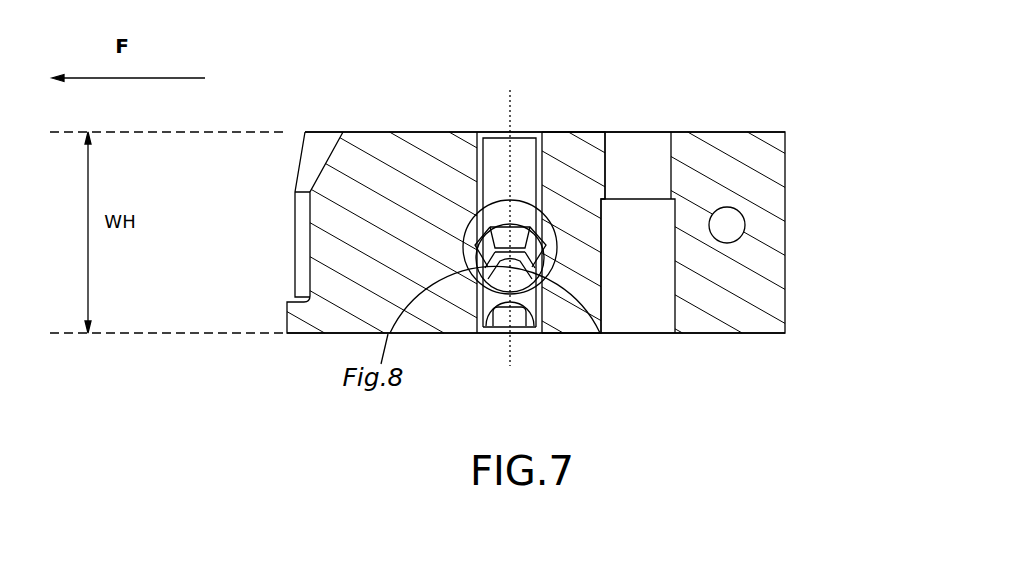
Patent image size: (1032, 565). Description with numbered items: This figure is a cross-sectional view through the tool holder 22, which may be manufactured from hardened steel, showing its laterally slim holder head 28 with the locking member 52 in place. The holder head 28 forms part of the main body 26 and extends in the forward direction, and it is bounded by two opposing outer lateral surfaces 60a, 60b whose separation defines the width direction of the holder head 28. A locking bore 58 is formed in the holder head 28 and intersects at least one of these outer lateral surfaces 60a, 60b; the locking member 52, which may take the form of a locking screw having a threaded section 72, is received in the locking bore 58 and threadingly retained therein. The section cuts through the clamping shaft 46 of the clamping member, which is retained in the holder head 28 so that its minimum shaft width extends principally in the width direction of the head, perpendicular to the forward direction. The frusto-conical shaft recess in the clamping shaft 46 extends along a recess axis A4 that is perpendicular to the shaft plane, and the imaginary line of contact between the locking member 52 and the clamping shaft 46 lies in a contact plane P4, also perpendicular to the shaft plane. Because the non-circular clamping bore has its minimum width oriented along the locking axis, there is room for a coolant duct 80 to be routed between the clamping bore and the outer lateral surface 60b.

The tool holder 22 is at (388, 113).
The main body 26 is at (577, 155).
The holder head 28 is at (379, 282).
The clamping shaft 46 is at (536, 247).
The locking member 52 is at (531, 299).
The locking bore 58 is at (522, 150).
The outer lateral surface 60a is at (450, 333).
The outer lateral surface 60b is at (437, 132).
The threaded section 72 is at (494, 273).
The coolant duct 80 is at (727, 225).
The contact plane P4 is at (512, 147).
The recess axis A4 is at (508, 313).